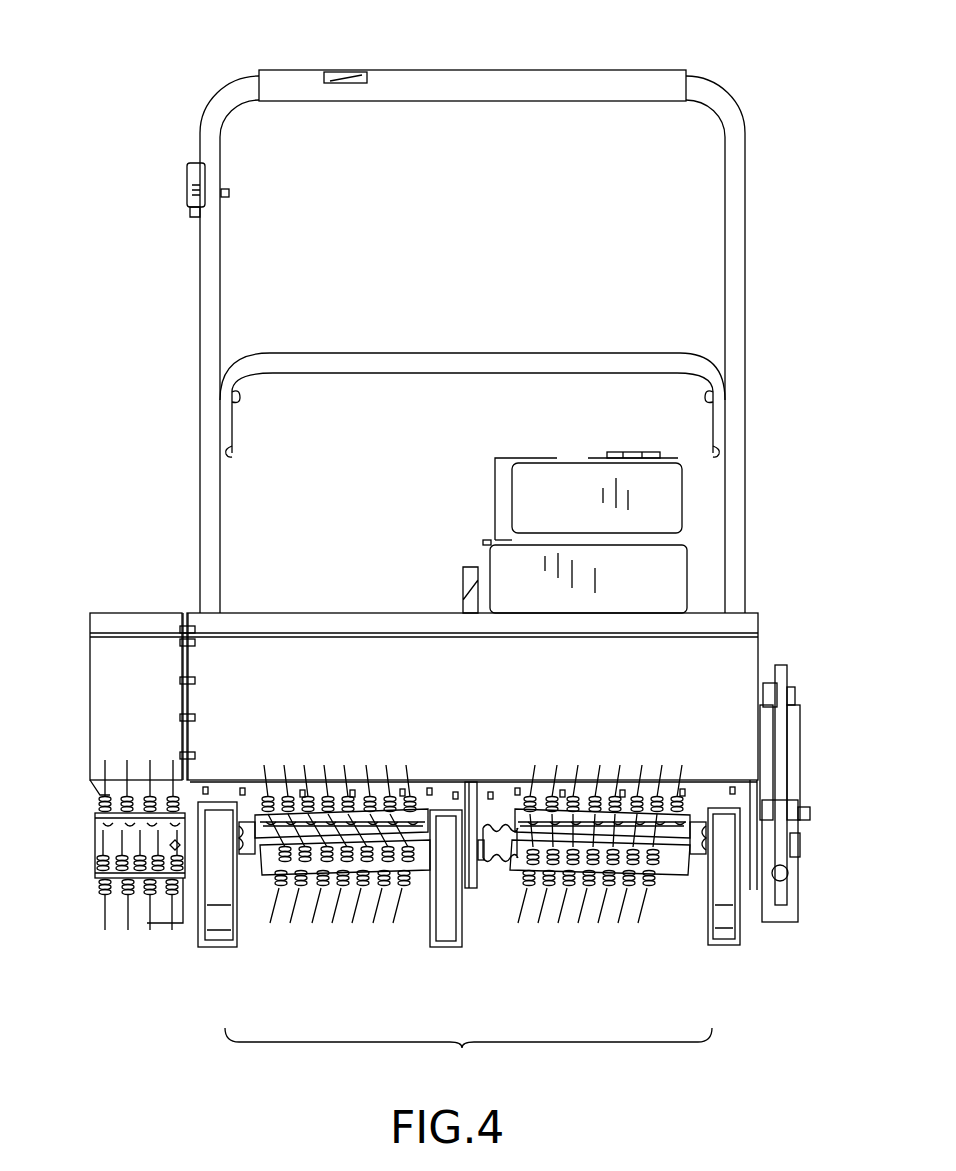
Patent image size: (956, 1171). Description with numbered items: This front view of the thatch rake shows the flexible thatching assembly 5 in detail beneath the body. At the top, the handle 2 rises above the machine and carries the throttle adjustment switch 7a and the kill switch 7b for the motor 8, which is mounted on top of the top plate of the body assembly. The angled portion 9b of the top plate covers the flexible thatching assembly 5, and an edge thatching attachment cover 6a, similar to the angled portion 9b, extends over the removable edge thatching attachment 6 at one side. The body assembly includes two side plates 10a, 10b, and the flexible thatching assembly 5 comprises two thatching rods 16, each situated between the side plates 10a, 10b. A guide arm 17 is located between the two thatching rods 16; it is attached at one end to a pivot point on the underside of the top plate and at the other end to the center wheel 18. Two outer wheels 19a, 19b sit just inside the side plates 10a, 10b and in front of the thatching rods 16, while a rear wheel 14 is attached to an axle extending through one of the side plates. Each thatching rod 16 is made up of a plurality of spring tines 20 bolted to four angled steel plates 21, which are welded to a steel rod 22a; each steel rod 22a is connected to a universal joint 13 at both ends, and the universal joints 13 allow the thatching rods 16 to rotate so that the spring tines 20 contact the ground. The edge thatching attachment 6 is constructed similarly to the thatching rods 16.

The handle 2 is at (738, 165).
The flexible thatching assembly 5 is at (468, 1054).
The edge thatching attachment 6 is at (77, 852).
The edge thatching attachment cover 6a is at (100, 668).
The throttle adjustment switch 7a is at (186, 178).
The kill switch 7b is at (343, 72).
The motor 8 is at (570, 472).
The angled portion 9b is at (745, 645).
The side plate 10a is at (752, 785).
The side plate 10b is at (190, 797).
The universal joint 13 is at (243, 880).
The rear wheel 14 is at (792, 913).
The thatching rod 16 is at (502, 918).
The guide arm 17 is at (473, 888).
The center wheel 18 is at (438, 947).
The outer wheel 19a is at (732, 927).
The outer wheel 19b is at (212, 923).
The spring tine 20 is at (123, 912).
The angled steel plate 21 is at (243, 797).
The steel rod 22a is at (268, 872).